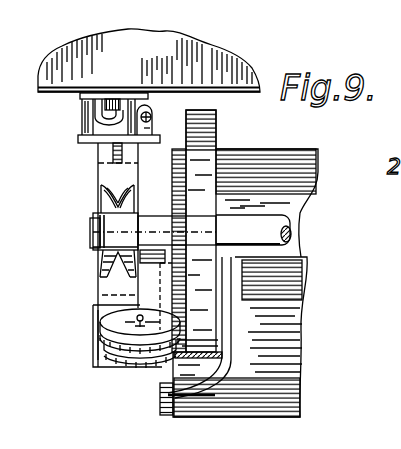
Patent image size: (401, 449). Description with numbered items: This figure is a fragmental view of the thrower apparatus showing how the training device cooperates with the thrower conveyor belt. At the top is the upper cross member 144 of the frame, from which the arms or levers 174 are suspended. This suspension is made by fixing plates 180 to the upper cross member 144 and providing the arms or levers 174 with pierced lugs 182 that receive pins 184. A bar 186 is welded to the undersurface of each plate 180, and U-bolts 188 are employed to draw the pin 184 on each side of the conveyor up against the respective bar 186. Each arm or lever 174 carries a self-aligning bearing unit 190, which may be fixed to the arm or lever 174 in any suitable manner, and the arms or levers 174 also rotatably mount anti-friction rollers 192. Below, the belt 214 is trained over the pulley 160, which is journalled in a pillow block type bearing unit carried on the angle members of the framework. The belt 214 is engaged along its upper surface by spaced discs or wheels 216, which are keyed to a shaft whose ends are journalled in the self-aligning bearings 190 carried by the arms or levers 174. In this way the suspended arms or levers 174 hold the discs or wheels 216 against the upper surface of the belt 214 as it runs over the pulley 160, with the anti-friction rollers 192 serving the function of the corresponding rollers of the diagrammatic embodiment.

The upper cross member 144 is at (233, 70).
The pulley 160 is at (228, 352).
The arms or levers 174 is at (106, 171).
The plates 180 is at (137, 95).
The pierced lugs 182 is at (78, 120).
The pins 184 is at (148, 128).
The bar 186 is at (112, 88).
The U-bolts 188 is at (98, 100).
The self-aligning bearing unit 190 is at (120, 245).
The anti-friction rollers 192 is at (120, 364).
The belt 214 is at (288, 337).
The discs or wheels 216 is at (200, 188).